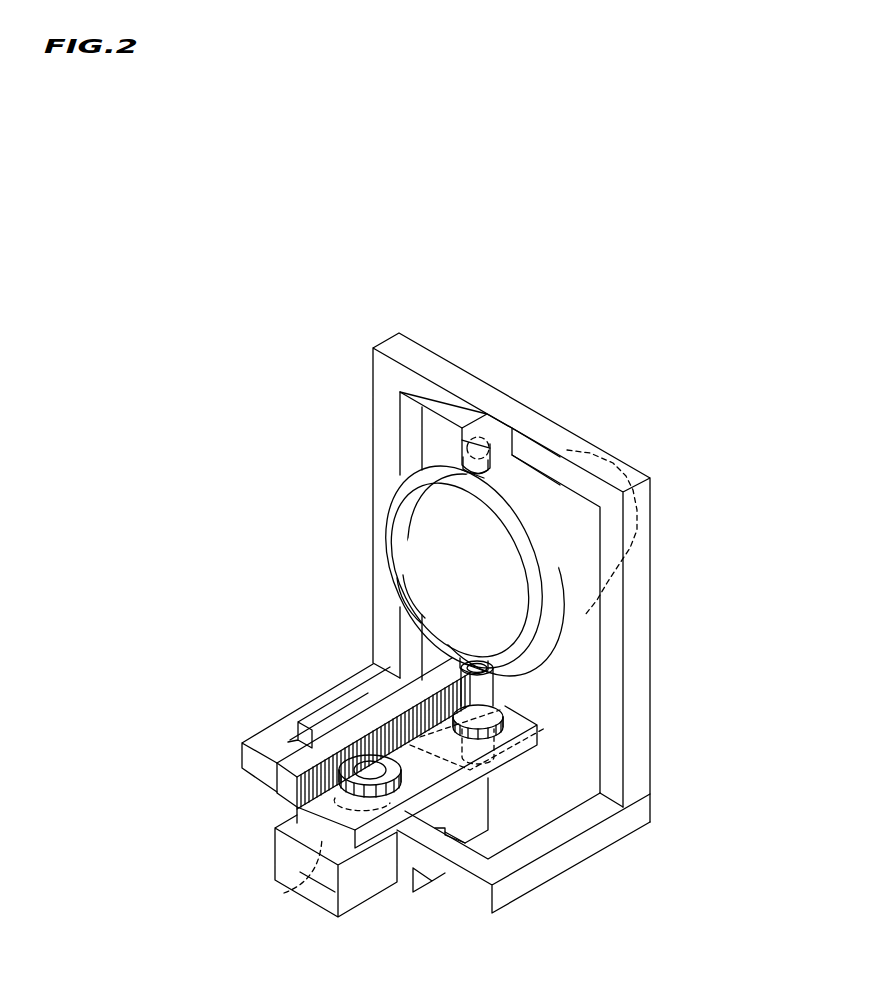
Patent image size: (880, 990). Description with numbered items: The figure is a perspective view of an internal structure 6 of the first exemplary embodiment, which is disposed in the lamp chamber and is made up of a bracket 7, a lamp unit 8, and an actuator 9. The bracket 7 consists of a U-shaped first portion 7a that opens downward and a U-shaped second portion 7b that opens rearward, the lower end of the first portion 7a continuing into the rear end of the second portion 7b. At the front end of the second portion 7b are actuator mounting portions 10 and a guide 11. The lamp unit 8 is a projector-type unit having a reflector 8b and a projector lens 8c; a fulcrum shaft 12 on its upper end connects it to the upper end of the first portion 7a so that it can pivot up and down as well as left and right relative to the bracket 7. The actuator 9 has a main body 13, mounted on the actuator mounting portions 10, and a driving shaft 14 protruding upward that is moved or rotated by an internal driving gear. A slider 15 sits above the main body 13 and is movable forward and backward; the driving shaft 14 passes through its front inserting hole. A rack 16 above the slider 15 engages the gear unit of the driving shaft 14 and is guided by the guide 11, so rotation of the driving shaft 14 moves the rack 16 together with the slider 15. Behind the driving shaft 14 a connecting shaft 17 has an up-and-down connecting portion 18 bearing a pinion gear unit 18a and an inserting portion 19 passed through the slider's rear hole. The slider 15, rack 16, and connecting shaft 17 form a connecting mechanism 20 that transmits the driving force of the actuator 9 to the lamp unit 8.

The internal structure 6 is at (165, 442).
The bracket 7 is at (643, 612).
The first portion 7a is at (650, 660).
The second portion 7b is at (580, 855).
The lamp unit 8 is at (580, 522).
The reflector 8b is at (580, 548).
The projector lens 8c is at (410, 515).
The actuator 9 is at (280, 848).
The actuator mounting portions 10 is at (425, 890).
The guide 11 is at (350, 700).
The fulcrum shaft 12 is at (470, 450).
The main body 13 is at (362, 895).
The driving shaft 14 is at (290, 888).
The slider 15 is at (275, 818).
The rack 16 is at (280, 750).
The connecting shaft 17 is at (456, 662).
The connecting portion 18 is at (505, 690).
The pinion gear unit 18a is at (500, 712).
The inserting portion 19 is at (545, 752).
The connecting mechanism 20 is at (141, 535).